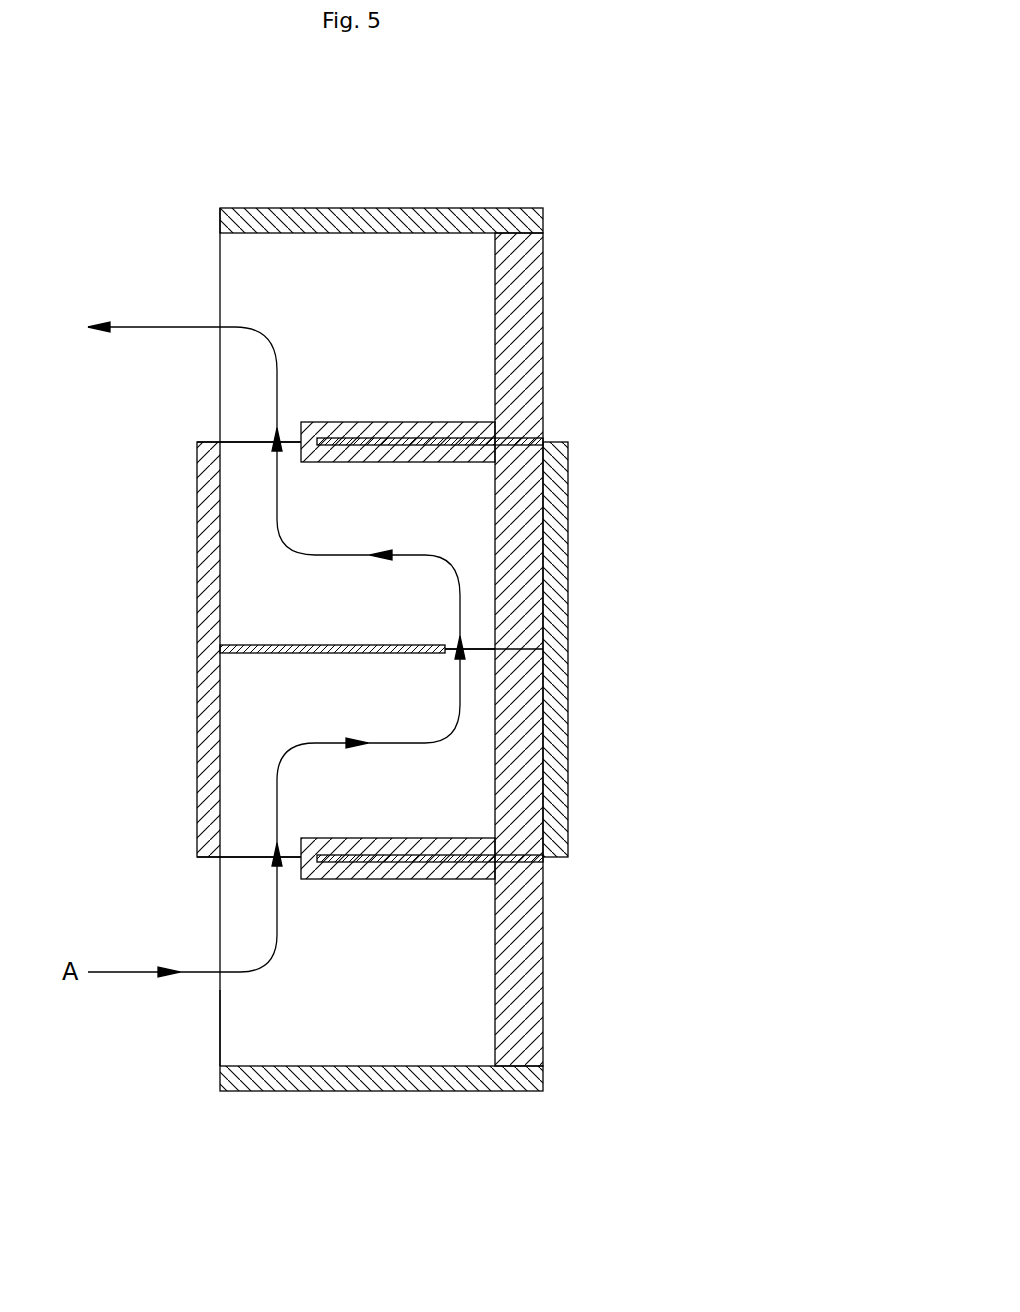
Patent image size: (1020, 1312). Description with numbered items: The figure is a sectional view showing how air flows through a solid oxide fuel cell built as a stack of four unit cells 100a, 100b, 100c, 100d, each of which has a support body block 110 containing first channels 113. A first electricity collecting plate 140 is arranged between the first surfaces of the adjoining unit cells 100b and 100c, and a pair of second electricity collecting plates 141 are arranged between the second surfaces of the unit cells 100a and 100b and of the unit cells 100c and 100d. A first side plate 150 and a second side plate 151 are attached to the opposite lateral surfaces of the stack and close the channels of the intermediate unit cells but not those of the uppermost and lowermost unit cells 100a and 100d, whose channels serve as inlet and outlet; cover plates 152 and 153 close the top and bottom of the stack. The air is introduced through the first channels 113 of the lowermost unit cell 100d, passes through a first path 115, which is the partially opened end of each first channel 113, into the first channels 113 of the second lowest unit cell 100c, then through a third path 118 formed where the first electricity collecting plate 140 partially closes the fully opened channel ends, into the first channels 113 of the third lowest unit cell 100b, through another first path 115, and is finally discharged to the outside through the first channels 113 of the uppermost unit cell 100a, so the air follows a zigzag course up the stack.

The uppermost unit cell 100a is at (562, 318).
The third lowest unit cell 100b is at (562, 538).
The second lowest unit cell 100c is at (562, 748).
The lowermost unit cell 100d is at (562, 973).
The support body block 110 is at (527, 356).
The first channel 113 is at (340, 990).
The first path 115 is at (245, 442).
The third path 118 is at (478, 648).
The first electricity collecting plate 140 is at (300, 650).
The second electricity collecting plate 141 is at (510, 432).
The first side plate 150 is at (207, 650).
The second side plate 151 is at (553, 590).
The cover plate 152 is at (510, 223).
The cover plate 153 is at (443, 1080).